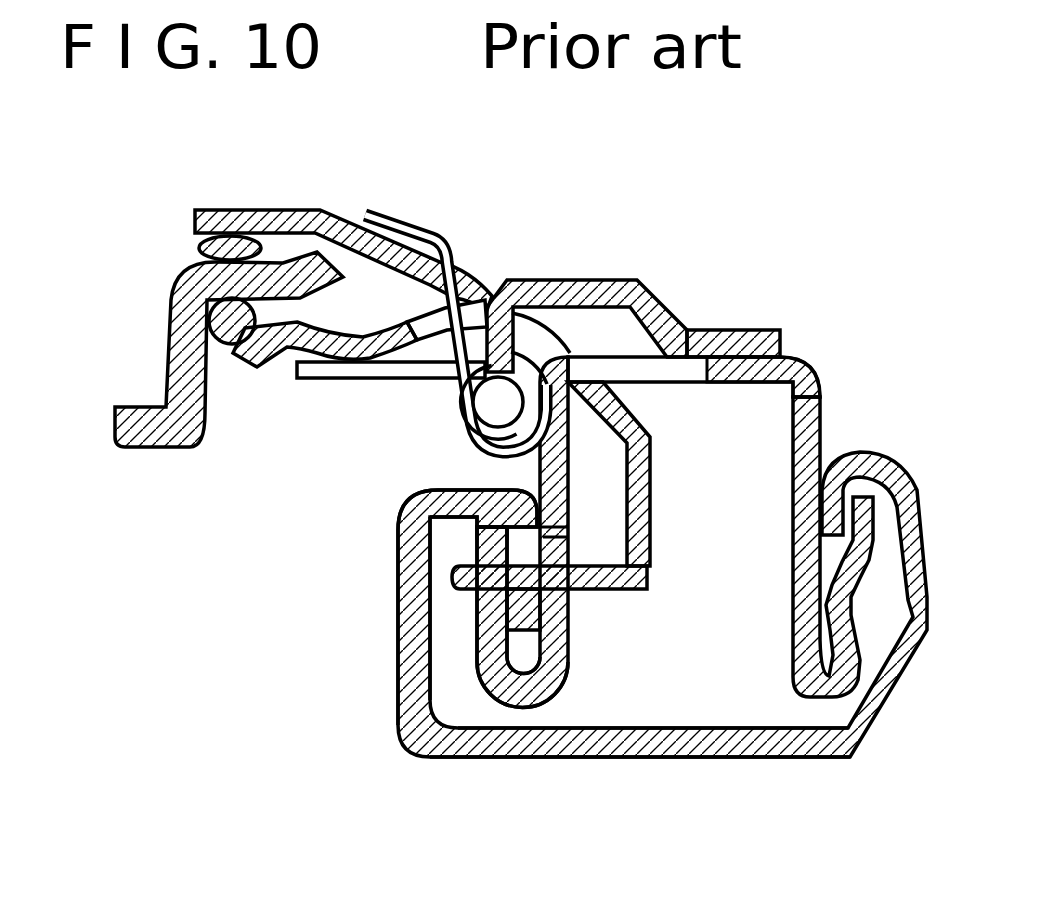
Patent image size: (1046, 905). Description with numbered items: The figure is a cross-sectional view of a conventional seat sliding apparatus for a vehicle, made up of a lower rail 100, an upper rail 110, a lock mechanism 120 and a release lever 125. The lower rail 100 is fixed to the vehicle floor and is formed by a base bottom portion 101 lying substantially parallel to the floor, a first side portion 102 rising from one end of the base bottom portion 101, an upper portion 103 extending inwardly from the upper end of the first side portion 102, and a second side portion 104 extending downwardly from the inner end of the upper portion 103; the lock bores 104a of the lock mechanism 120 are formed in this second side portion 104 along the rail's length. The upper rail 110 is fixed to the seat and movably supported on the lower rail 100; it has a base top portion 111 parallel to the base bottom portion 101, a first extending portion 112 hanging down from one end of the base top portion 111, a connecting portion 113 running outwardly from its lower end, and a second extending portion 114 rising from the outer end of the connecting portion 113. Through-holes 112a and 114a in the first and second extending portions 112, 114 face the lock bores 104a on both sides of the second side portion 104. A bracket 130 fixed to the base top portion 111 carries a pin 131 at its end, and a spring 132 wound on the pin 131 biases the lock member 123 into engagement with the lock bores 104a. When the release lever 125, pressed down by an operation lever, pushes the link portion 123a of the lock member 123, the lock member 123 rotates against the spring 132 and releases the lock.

The lower rail 100 is at (747, 763).
The base bottom portion 101 is at (640, 747).
The first side portion 102 is at (415, 632).
The upper portion 103 is at (468, 492).
The second side portion 104 is at (523, 526).
The lock bores 104a is at (537, 598).
The upper rail 110 is at (830, 395).
The base top portion 111 is at (748, 347).
The first extending portion 112 is at (557, 653).
The through-hole 112a is at (573, 556).
The connecting portion 113 is at (535, 694).
The second extending portion 114 is at (487, 661).
The through-hole 114a is at (503, 598).
The lock mechanism 120 is at (732, 268).
The lock member 123 is at (652, 468).
The link portion 123a is at (267, 345).
The release lever 125 is at (170, 357).
The bracket 130 is at (612, 282).
The pin 131 is at (496, 400).
The spring 132 is at (423, 228).